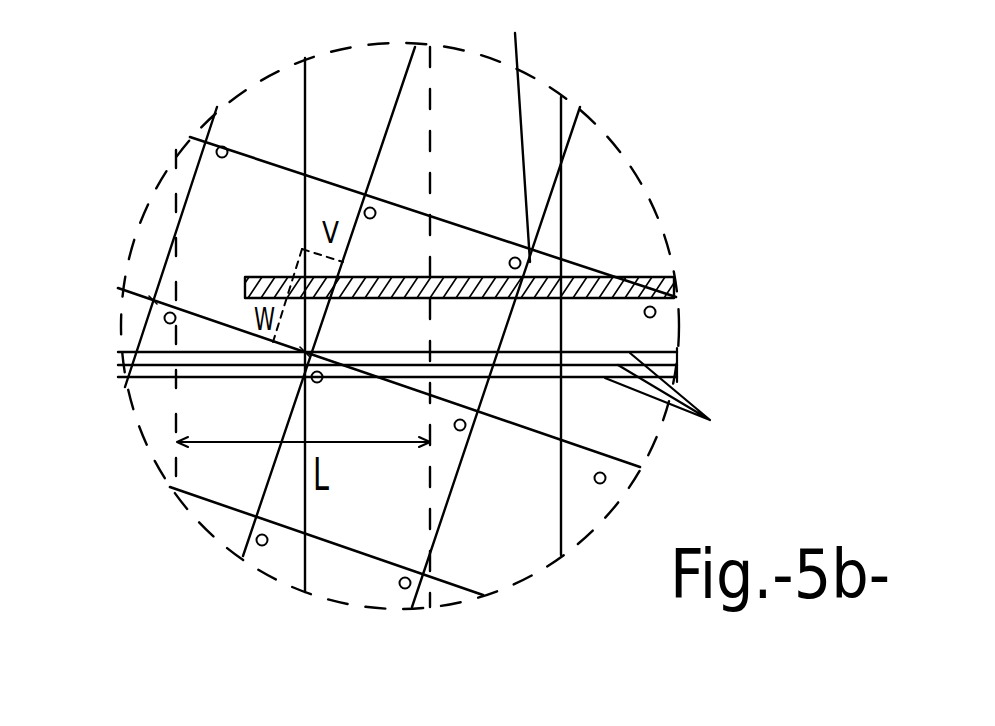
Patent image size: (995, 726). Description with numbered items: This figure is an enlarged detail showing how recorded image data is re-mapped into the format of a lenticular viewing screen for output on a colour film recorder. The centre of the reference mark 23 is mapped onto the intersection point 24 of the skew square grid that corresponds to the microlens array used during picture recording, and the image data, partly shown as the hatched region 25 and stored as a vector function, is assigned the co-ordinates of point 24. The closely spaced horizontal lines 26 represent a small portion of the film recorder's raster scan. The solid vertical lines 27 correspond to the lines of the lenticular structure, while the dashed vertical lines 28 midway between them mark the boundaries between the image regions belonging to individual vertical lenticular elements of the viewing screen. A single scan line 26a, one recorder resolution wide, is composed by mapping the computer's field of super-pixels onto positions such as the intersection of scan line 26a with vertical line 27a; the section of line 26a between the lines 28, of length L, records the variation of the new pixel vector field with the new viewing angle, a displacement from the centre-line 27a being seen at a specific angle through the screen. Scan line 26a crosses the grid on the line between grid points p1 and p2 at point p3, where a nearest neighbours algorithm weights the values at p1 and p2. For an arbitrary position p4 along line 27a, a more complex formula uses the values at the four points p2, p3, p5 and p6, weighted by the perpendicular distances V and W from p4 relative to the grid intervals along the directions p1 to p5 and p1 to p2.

The reference mark 23 is at (522, 252).
The intersection point 24 is at (518, 131).
The hatched region 25 is at (620, 277).
The horizontal lines 26 is at (432, 409).
The scan line 26a is at (158, 351).
The solid vertical lines 27 is at (560, 535).
The vertical line 27a is at (300, 182).
The dashed vertical lines 28 is at (425, 95).
The grid point p1 is at (320, 362).
The grid point p2 is at (153, 297).
The crossing point p3 is at (305, 352).
The arbitrary position p4 is at (300, 248).
The grid point p5 is at (368, 200).
The grid point p6 is at (212, 143).